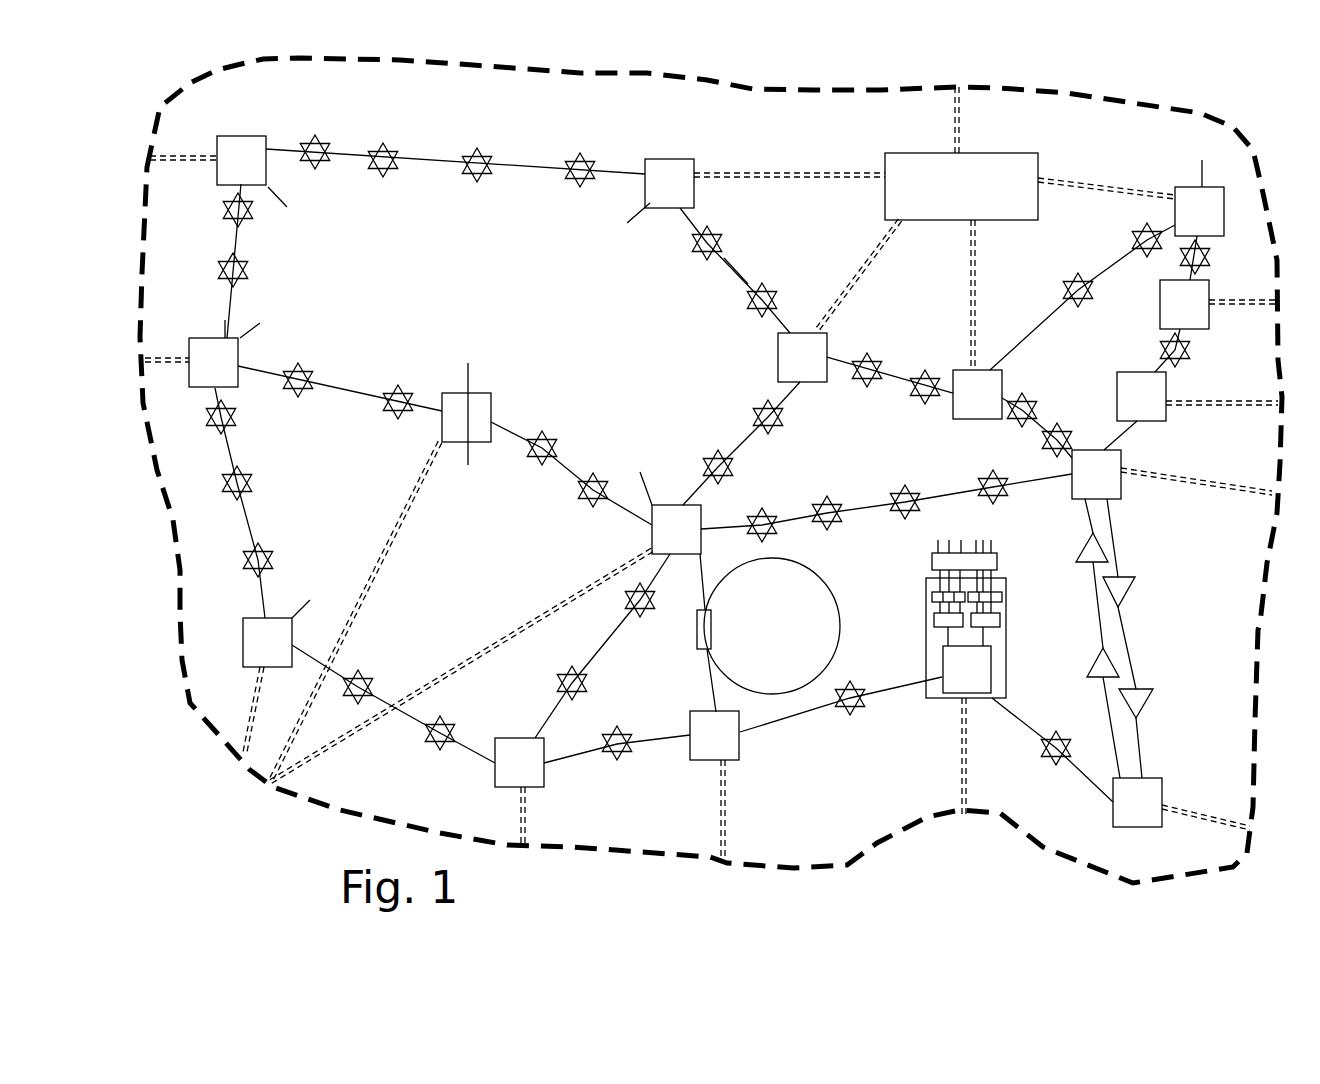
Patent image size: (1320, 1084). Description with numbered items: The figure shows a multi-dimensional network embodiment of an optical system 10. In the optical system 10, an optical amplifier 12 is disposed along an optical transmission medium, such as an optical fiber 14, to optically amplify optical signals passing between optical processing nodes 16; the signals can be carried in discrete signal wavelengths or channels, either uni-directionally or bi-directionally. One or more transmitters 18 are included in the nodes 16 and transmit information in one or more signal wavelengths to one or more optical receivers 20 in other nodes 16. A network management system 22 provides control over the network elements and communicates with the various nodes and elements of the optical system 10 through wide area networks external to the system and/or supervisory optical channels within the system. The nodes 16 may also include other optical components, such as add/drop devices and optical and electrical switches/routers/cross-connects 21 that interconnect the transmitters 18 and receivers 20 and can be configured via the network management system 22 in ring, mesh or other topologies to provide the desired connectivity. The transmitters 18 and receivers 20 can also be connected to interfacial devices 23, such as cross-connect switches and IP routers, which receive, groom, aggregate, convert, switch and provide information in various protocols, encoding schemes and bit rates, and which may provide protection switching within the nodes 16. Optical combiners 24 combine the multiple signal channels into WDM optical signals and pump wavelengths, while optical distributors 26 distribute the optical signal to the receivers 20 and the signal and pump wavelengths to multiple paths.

The optical system 10 is at (279, 826).
The optical amplifier 12 is at (772, 288).
The optical fiber 14 is at (733, 268).
The optical processing node 16 is at (690, 160).
The transmitter 18 is at (932, 597).
The optical receiver 20 is at (1003, 595).
The switches/routers/cross-connects 21 is at (992, 658).
The network management system 22 is at (1038, 170).
The interfacial device 23 is at (997, 555).
The optical combiner 24 is at (934, 621).
The optical distributor 26 is at (1003, 620).